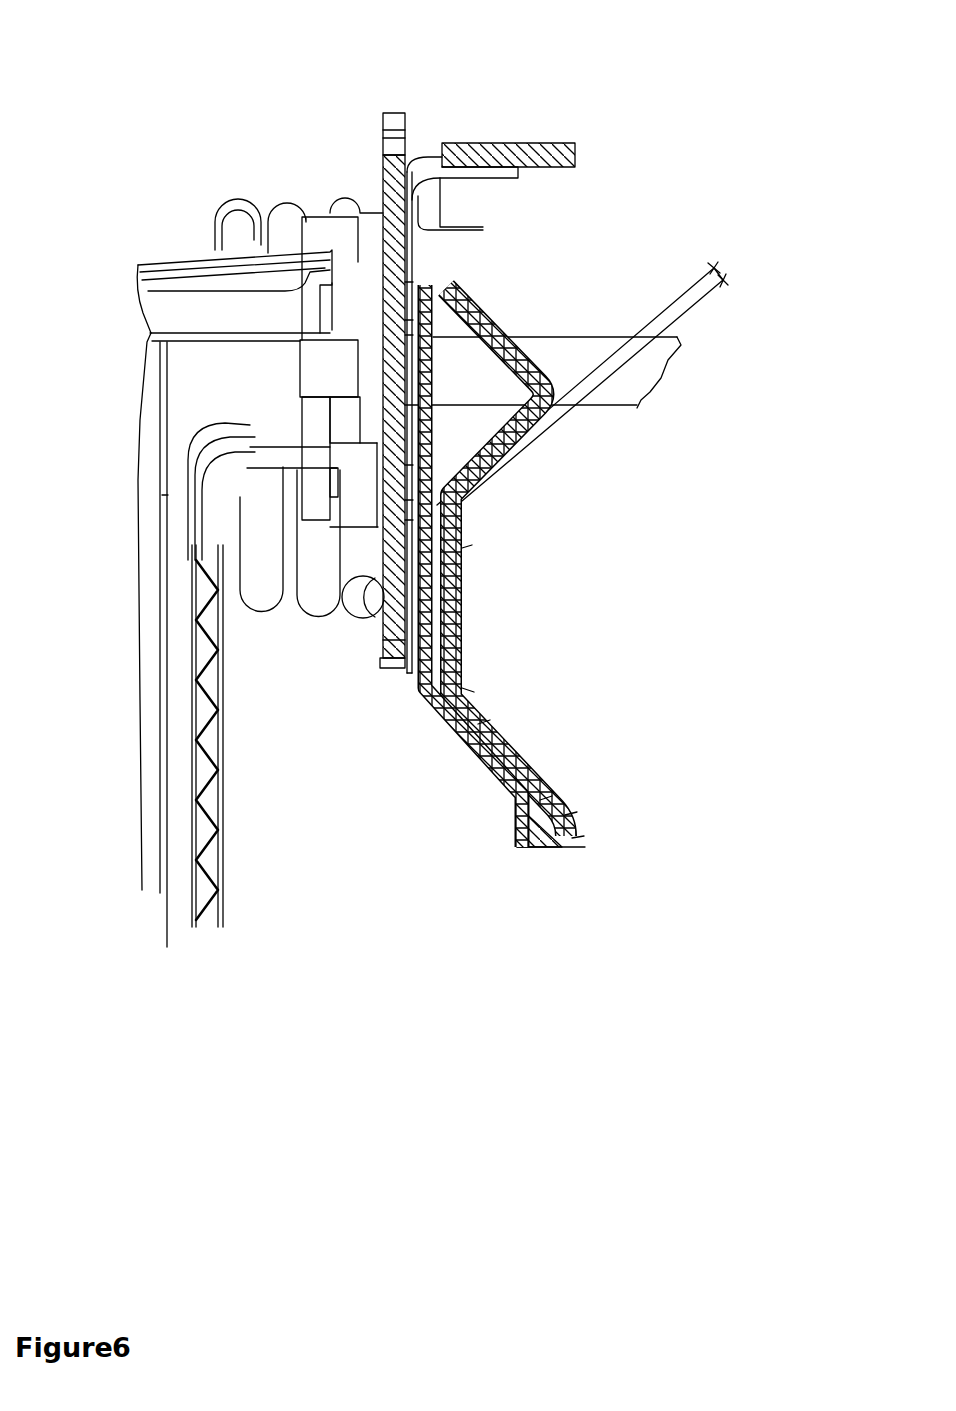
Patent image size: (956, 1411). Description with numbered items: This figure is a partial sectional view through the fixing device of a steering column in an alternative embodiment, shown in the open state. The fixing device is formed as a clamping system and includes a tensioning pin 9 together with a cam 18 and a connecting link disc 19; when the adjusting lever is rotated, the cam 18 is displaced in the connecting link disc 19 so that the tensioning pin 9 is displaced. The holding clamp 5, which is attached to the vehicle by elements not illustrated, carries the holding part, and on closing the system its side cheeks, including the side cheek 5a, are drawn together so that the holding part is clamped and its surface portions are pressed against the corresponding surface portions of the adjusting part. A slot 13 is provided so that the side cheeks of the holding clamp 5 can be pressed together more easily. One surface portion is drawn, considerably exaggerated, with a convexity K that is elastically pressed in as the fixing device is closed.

The holding clamp 5 is at (540, 158).
The side cheek 5a is at (388, 573).
The tensioning pin 9 is at (605, 362).
The slot 13 is at (430, 158).
The cam 18 is at (325, 367).
The connecting link disc 19 is at (350, 457).
The convexity K is at (727, 261).